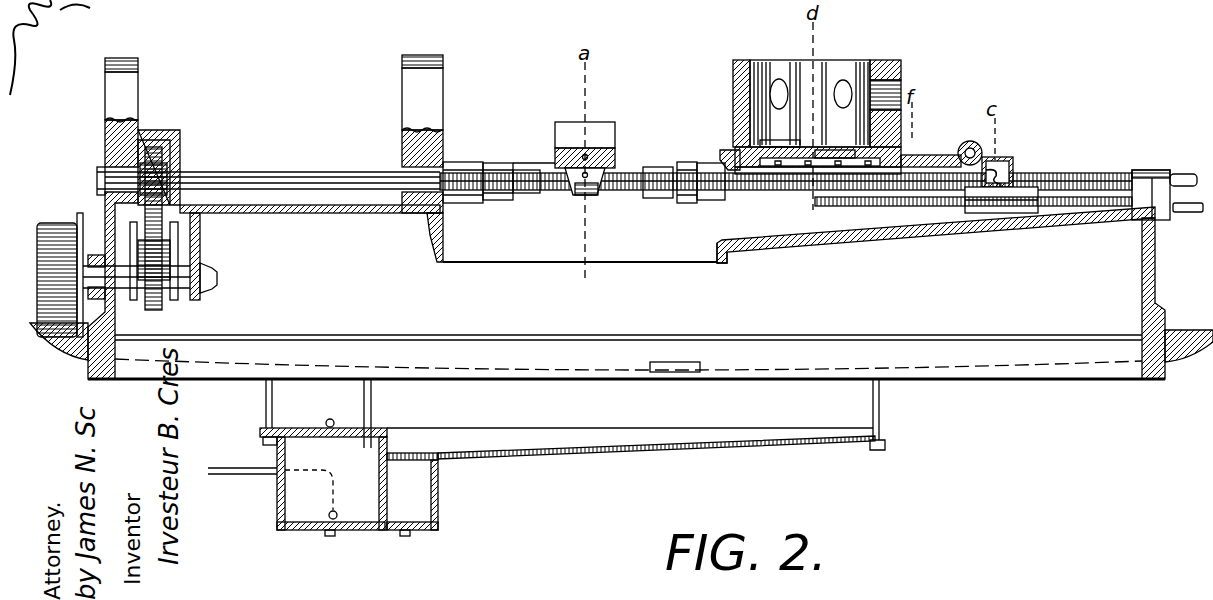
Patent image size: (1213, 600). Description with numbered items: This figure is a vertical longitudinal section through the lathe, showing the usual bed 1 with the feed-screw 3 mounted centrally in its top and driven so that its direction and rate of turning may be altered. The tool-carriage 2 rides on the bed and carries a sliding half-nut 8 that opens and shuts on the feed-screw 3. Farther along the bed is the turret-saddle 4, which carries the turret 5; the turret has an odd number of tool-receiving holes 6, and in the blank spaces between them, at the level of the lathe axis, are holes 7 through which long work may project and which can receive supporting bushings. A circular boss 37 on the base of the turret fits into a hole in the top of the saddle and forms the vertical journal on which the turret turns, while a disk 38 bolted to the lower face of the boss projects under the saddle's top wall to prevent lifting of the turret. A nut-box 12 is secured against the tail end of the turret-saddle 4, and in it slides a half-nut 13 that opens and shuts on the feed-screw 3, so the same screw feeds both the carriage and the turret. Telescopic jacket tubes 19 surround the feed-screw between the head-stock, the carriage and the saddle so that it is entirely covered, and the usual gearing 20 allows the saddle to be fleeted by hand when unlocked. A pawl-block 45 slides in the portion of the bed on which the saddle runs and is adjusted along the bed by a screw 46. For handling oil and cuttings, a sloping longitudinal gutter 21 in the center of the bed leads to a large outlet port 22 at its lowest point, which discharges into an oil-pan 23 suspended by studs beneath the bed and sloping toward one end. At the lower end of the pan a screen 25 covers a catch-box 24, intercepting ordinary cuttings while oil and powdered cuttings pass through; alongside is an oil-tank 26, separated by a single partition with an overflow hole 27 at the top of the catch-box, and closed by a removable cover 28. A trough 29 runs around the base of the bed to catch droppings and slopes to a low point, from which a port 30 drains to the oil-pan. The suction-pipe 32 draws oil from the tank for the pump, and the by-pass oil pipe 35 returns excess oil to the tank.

The bed 1 is at (1144, 276).
The tool-carriage 2 is at (532, 163).
The feed-screw 3 is at (356, 177).
The turret-saddle 4 is at (722, 158).
The turret 5 is at (762, 70).
The tool-receiving holes 6 is at (738, 90).
The holes 7 is at (893, 92).
The sliding half-nut 8 is at (592, 196).
The nut-box 12 is at (1013, 172).
The half-nut 13 is at (1005, 157).
The telescopic jacket tubes 19 is at (500, 160).
The gearing 20 is at (970, 143).
The sloping longitudinal gutter 21 is at (806, 231).
The outlet port 22 is at (704, 256).
The oil-pan 23 is at (732, 440).
The catch-box 24 is at (430, 500).
The screen 25 is at (414, 453).
The oil-tank 26 is at (308, 516).
The overflow hole 27 is at (380, 470).
The removable cover 28 is at (318, 430).
The trough 29 is at (1178, 332).
The port 30 is at (703, 362).
The suction-pipe 32 is at (262, 474).
The by-pass oil pipe 35 is at (372, 410).
The circular boss 37 is at (780, 132).
The disk 38 is at (829, 165).
The pawl-block 45 is at (1000, 213).
The screw 46 is at (920, 206).